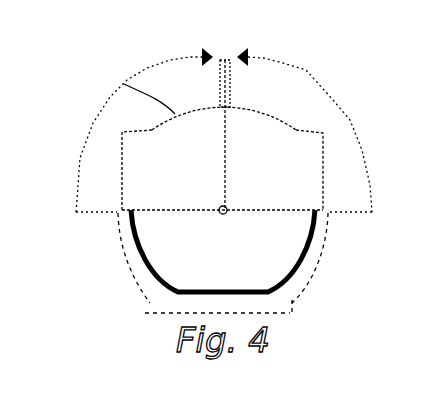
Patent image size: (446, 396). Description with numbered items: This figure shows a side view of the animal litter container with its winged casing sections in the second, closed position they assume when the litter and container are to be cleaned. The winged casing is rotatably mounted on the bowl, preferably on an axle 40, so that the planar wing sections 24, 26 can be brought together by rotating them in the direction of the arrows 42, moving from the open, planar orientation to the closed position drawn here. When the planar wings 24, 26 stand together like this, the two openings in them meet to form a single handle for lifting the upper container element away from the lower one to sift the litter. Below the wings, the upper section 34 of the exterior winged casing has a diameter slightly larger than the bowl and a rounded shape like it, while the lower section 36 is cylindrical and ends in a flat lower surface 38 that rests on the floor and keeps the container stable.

The planar wing section 24 is at (231, 85).
The planar wing section 26 is at (219, 85).
The upper section of the exterior winged casing 34 is at (124, 84).
The lower section of the exterior winged casing 36 is at (298, 309).
The flat lower surface 38 is at (120, 166).
The axle 40 is at (226, 214).
The arrows 42 is at (170, 61).